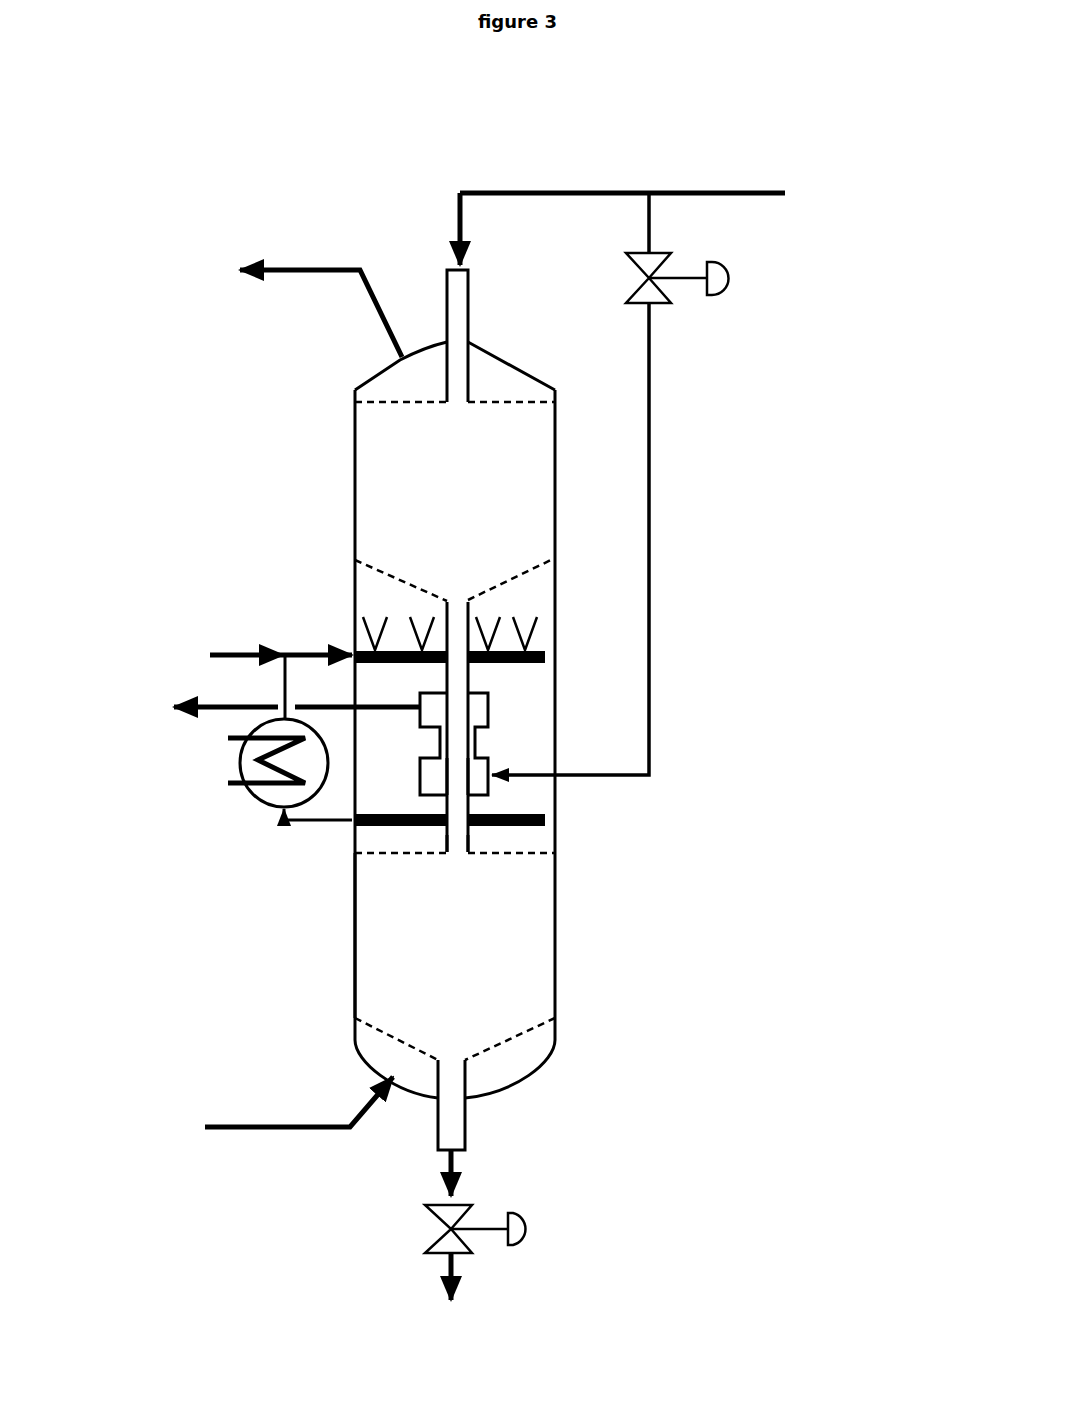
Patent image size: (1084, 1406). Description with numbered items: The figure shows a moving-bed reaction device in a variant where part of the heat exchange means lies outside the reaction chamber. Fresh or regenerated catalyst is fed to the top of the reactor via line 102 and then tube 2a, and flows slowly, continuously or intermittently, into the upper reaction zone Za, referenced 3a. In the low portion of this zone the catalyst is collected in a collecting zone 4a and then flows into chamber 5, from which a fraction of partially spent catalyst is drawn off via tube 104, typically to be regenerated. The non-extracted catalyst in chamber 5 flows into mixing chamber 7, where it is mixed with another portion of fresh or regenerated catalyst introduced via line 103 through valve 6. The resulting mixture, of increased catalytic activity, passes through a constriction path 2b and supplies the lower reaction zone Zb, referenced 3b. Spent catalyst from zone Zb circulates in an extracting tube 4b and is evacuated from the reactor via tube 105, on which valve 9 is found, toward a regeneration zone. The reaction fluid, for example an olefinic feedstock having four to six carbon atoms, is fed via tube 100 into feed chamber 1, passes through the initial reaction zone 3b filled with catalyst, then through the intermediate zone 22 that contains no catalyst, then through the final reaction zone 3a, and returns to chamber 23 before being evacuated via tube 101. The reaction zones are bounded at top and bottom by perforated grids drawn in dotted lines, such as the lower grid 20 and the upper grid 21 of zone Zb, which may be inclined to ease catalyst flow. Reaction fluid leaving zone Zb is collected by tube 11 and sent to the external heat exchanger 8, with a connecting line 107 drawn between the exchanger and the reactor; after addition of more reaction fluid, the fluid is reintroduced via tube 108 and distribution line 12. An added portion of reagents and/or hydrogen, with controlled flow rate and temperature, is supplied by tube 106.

The feed chamber 1 is at (488, 1076).
The tube 2a is at (465, 343).
The constriction path 2b is at (458, 842).
The upper reaction zone 3a is at (383, 477).
The lower reaction zone 3b is at (408, 932).
The collecting zone 4a is at (452, 598).
The extracting tube 4b is at (458, 1133).
The chamber 5 is at (476, 706).
The valve 6 is at (738, 278).
The mixing chamber 7 is at (458, 776).
The heat exchanger 8 is at (219, 793).
The valve 9 is at (537, 1237).
The tube 11 is at (553, 818).
The distribution line 12 is at (553, 655).
The bottom cone 20 is at (403, 1035).
The lower partition 21 is at (490, 862).
The intermediate zone 22 is at (516, 726).
The chamber 23 is at (422, 357).
The tube 100 is at (285, 1141).
The tube 101 is at (319, 262).
The line 102 is at (537, 178).
The line 103 is at (654, 430).
The tube 104 is at (215, 699).
The tube 105 is at (441, 1167).
The tube 106 is at (235, 647).
The return line 107 is at (304, 823).
The tube 108 is at (311, 647).